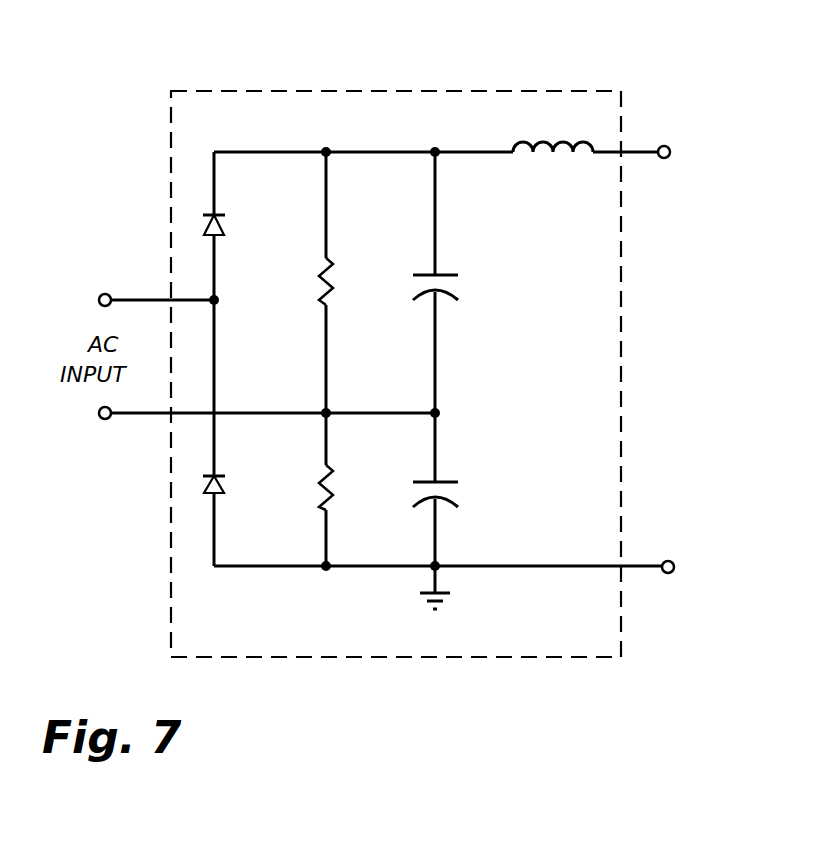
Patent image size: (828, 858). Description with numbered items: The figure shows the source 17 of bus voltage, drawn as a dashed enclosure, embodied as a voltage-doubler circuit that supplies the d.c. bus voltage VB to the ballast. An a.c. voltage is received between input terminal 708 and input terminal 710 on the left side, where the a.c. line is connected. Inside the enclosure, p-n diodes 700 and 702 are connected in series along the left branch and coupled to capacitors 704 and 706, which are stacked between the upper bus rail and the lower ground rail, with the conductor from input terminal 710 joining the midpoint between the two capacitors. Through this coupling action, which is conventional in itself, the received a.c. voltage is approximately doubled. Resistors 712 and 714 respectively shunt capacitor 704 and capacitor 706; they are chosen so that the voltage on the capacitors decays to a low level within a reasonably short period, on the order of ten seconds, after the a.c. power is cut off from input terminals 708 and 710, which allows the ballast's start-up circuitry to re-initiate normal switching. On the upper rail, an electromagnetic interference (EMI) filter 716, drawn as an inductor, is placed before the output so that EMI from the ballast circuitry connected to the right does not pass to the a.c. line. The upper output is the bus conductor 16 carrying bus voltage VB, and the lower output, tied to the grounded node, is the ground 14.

The source of bus voltage 17 is at (443, 91).
The input terminal 708 is at (129, 295).
The input terminal 710 is at (130, 420).
The p-n diode 700 is at (257, 215).
The p-n diode 702 is at (228, 482).
The resistor 712 is at (312, 290).
The resistor 714 is at (338, 482).
The capacitor 704 is at (461, 287).
The capacitor 706 is at (461, 495).
The electromagnetic interference (EMI) filter 716 is at (554, 158).
The bus conductor 16 is at (644, 146).
The ground 14 is at (644, 560).